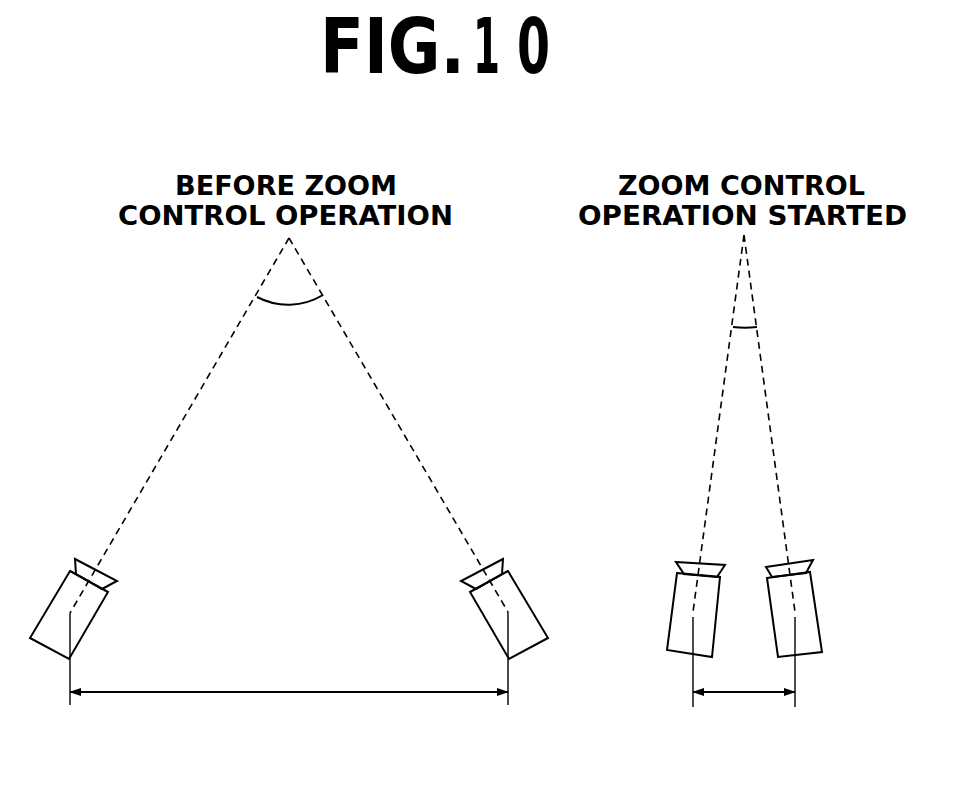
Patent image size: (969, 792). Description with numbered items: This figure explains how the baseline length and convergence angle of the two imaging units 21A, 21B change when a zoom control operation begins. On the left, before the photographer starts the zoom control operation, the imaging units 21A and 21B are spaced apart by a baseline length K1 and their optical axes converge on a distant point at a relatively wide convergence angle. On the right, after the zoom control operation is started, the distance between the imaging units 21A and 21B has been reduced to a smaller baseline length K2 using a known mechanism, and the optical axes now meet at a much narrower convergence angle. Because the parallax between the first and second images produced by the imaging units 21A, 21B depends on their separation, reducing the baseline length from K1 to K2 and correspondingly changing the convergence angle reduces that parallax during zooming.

The imaging unit 21A is at (92, 627).
The imaging unit 21B is at (488, 632).
The baseline length K1 is at (289, 670).
The baseline length K2 is at (744, 672).